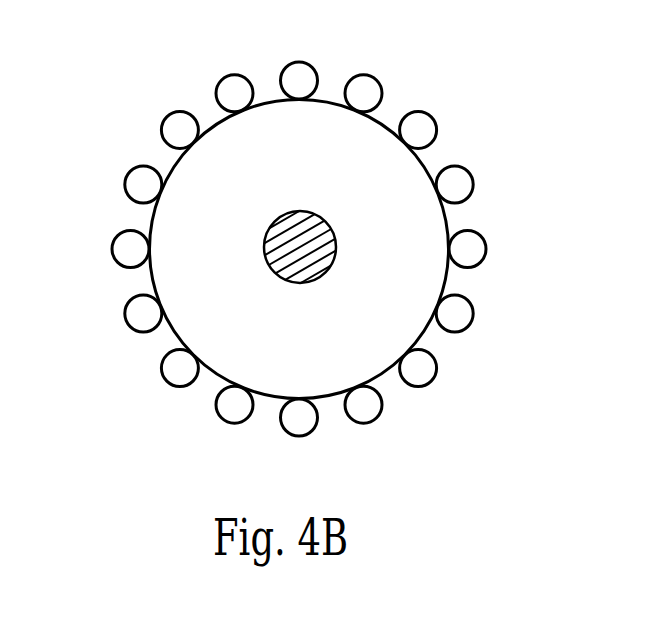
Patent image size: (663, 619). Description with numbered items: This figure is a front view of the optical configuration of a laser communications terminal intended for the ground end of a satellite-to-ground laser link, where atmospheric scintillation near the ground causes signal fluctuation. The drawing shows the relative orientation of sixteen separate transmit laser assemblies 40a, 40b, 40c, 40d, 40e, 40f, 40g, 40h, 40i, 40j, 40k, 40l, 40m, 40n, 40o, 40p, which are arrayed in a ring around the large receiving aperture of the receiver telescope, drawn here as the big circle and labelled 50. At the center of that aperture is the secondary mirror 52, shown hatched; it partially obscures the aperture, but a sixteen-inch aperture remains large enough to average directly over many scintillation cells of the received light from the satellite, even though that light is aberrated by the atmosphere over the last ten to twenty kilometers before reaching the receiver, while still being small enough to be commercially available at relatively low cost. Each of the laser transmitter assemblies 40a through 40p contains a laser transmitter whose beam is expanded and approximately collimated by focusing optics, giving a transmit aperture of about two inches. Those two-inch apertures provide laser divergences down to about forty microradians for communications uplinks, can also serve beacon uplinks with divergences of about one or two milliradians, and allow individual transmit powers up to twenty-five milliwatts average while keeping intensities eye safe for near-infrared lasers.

The disk body 50 is at (229, 355).
The secondary mirror 52 is at (337, 260).
The laser transmitter assembly 40a is at (298, 60).
The laser transmitter assembly 40b is at (377, 75).
The laser transmitter assembly 40c is at (436, 126).
The laser transmitter assembly 40d is at (472, 182).
The laser transmitter assembly 40e is at (486, 248).
The laser transmitter assembly 40f is at (473, 309).
The laser transmitter assembly 40g is at (432, 381).
The laser transmitter assembly 40h is at (375, 418).
The laser transmitter assembly 40i is at (302, 436).
The laser transmitter assembly 40j is at (222, 421).
The laser transmitter assembly 40k is at (161, 371).
The laser transmitter assembly 40l is at (125, 315).
The laser transmitter assembly 40m is at (112, 248).
The laser transmitter assembly 40n is at (125, 181).
The laser transmitter assembly 40o is at (164, 121).
The laser transmitter assembly 40p is at (223, 80).